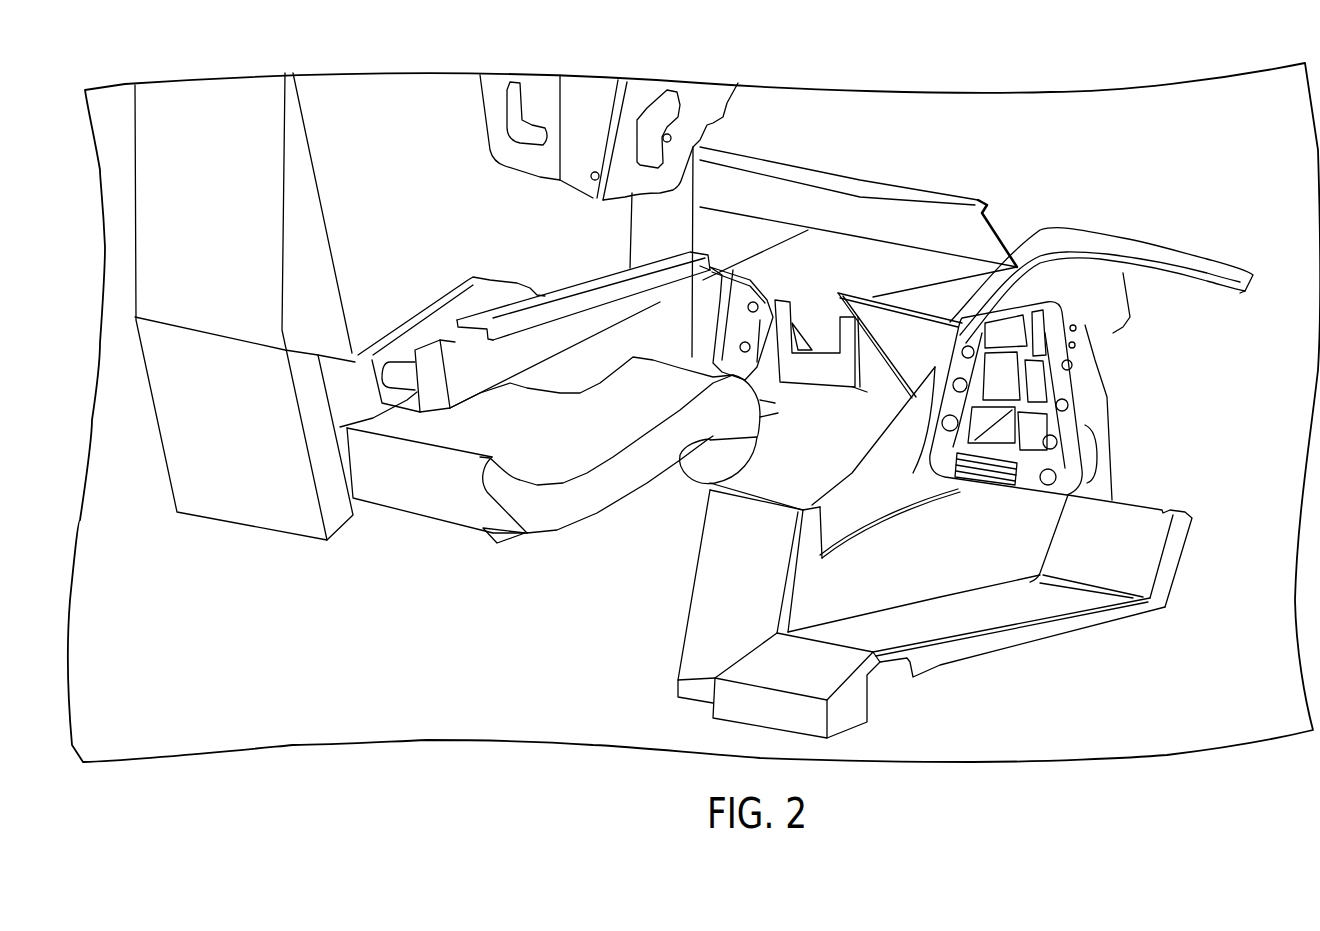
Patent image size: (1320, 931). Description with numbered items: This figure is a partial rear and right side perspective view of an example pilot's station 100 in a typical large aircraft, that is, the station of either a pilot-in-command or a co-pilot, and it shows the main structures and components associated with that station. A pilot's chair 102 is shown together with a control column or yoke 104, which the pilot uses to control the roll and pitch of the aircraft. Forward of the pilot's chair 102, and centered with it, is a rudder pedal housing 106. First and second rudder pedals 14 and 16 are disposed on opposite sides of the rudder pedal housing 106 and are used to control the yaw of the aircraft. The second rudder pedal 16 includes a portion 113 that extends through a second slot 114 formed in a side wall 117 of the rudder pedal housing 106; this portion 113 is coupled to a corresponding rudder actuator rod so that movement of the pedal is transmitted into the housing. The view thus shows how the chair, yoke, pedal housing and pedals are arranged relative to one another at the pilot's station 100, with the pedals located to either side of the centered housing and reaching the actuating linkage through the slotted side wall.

The pilot's station 100 is at (1225, 213).
The pilot's chair 102 is at (192, 492).
The control column or yoke 104 is at (647, 242).
The first rudder pedal 14 is at (737, 333).
The second rudder pedal 16 is at (1072, 388).
The portion of the second rudder pedal 113 is at (927, 493).
The second slot 114 is at (850, 535).
The side wall 117 is at (1011, 533).
The rudder pedal housing 106 is at (1010, 560).